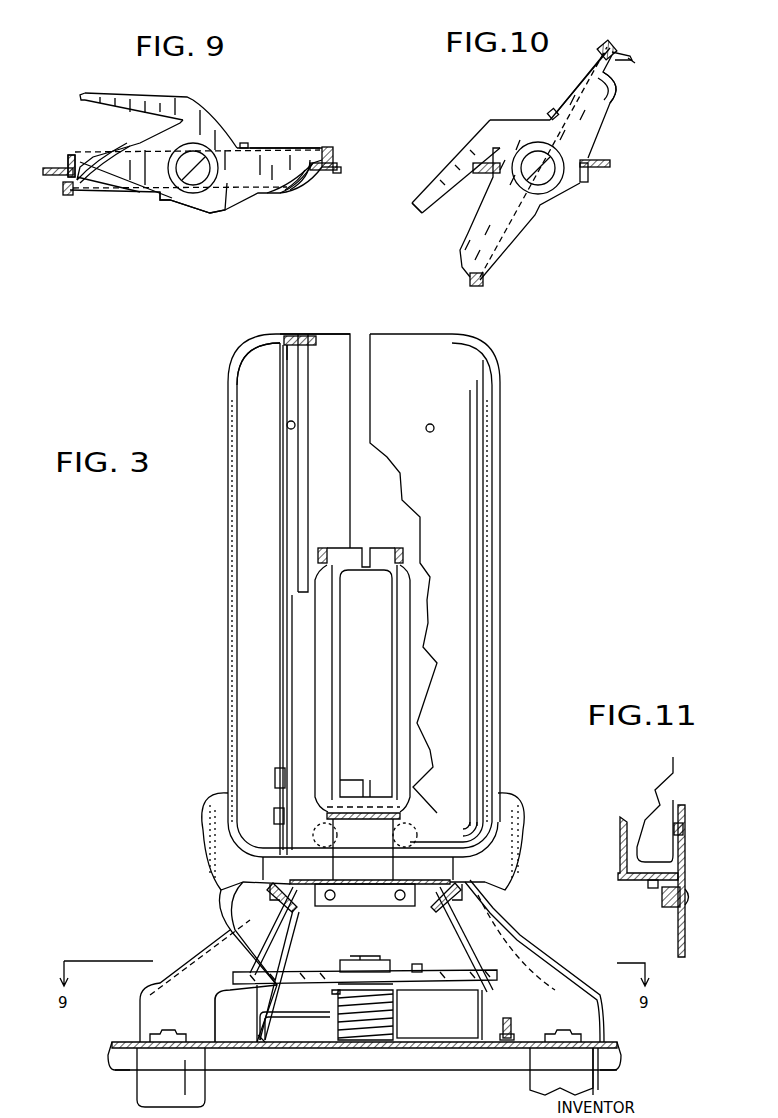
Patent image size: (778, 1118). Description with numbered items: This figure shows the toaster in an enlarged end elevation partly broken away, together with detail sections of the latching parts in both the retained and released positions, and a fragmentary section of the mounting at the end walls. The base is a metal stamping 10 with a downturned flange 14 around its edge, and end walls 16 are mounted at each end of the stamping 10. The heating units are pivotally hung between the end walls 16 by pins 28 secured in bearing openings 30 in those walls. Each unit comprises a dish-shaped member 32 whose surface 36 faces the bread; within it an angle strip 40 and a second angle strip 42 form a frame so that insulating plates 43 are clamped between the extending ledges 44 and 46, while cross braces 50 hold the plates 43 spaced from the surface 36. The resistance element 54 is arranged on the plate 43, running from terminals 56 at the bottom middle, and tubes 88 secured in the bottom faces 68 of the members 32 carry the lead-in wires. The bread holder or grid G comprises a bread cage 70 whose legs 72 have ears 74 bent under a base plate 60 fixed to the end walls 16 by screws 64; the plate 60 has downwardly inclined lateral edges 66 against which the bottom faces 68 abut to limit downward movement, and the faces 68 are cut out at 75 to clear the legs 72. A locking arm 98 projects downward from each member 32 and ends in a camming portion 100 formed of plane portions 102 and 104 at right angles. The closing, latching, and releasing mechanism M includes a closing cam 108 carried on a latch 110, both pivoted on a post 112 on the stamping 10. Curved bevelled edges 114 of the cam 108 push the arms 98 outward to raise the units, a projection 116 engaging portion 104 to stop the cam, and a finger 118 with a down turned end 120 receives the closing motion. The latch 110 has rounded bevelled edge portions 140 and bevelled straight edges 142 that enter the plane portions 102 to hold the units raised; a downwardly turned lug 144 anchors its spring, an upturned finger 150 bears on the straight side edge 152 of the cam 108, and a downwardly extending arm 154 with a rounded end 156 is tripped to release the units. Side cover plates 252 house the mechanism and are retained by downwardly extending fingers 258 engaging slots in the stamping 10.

In FIG. 3, the metal stamping 10 is at (300, 1050).
In FIG. 3, the downturned flange 14 is at (110, 1058).
In FIG. 11, the end walls 16 is at (686, 862).
In FIG. 11, the pins 28 is at (685, 832).
In FIG. 11, the bearing openings 30 is at (684, 818).
In FIG. 3, the dish-shaped member 32 is at (219, 511).
In FIG. 3, the surface 36 is at (228, 548).
In FIG. 3, the angle strip 40 is at (297, 334).
In FIG. 3, the second angle strip 42 is at (318, 334).
In FIG. 3, the insulating plates 43 is at (280, 405).
In FIG. 3, the extending ledge 44 is at (265, 346).
In FIG. 3, the extending ledge 46 is at (287, 348).
In FIG. 3, the cross braces 50 is at (308, 435).
In FIG. 3, the resistance element 54 is at (284, 490).
In FIG. 3, the terminals 56 is at (278, 770).
In FIG. 3, the base plate 60 is at (382, 886).
In FIG. 3, the screws 64 is at (331, 898).
In FIG. 11, the screws 64 is at (690, 897).
In FIG. 3, the downwardly inclined lateral edges 66 is at (455, 888).
In FIG. 3, the bottom faces 68 is at (435, 895).
In FIG. 3, the bread cage 70 is at (383, 560).
In FIG. 3, the legs 72 is at (430, 847).
In FIG. 11, the ears 74 is at (650, 890).
In FIG. 3, the cut out 75 is at (335, 870).
In FIG. 3, the tubes 88 is at (280, 872).
In FIG. 3, the locking arm 98 is at (222, 878).
In FIG. 9, the camming portion 100 is at (53, 158).
In FIG. 3, the camming portion 100 is at (268, 940).
In FIG. 9, the plane portion 102 is at (76, 155).
In FIG. 10, the plane portion 102 is at (590, 172).
In FIG. 3, the plane portion 102 is at (225, 950).
In FIG. 9, the plane portion 104 is at (60, 175).
In FIG. 10, the plane portion 104 is at (610, 162).
In FIG. 3, the plane portion 104 is at (278, 925).
In FIG. 9, the closing cam 108 is at (262, 175).
In FIG. 10, the closing cam 108 is at (514, 212).
In FIG. 3, the closing cam 108 is at (296, 970).
In FIG. 9, the latch 110 is at (300, 190).
In FIG. 10, the latch 110 is at (612, 103).
In FIG. 3, the latch 110 is at (462, 982).
In FIG. 9, the post 112 is at (200, 182).
In FIG. 10, the post 112 is at (550, 180).
In FIG. 3, the post 112 is at (372, 1048).
In FIG. 9, the curved bevelled edges 114 is at (118, 150).
In FIG. 9, the projection 116 is at (68, 196).
In FIG. 10, the projection 116 is at (604, 48).
In FIG. 9, the finger 118 is at (143, 82).
In FIG. 10, the finger 118 is at (440, 168).
In FIG. 3, the finger 118 is at (288, 1006).
In FIG. 9, the down turned end 120 is at (85, 82).
In FIG. 10, the down turned end 120 is at (416, 210).
In FIG. 3, the down turned end 120 is at (262, 1044).
In FIG. 9, the rounded bevelled edge portions 140 is at (138, 190).
In FIG. 10, the rounded bevelled edge portions 140 is at (618, 88).
In FIG. 9, the bevelled straight edges 142 is at (100, 193).
In FIG. 9, the downwardly turned lug 144 is at (168, 200).
In FIG. 3, the downwardly turned lug 144 is at (338, 1000).
In FIG. 9, the upturned finger 150 is at (244, 142).
In FIG. 10, the upturned finger 150 is at (550, 112).
In FIG. 3, the upturned finger 150 is at (420, 966).
In FIG. 9, the straight side edge 152 is at (272, 152).
In FIG. 10, the straight side edge 152 is at (575, 92).
In FIG. 9, the downwardly extending arm 154 is at (337, 160).
In FIG. 10, the downwardly extending arm 154 is at (622, 52).
In FIG. 3, the downwardly extending arm 154 is at (497, 1003).
In FIG. 9, the rounded end 156 is at (341, 170).
In FIG. 10, the rounded end 156 is at (630, 60).
In FIG. 3, the rounded end 156 is at (508, 1042).
In FIG. 3, the side cover plates 252 is at (566, 973).
In FIG. 3, the downwardly extending fingers 258 is at (612, 1062).
In FIG. 3, the bread holder or grid G is at (337, 532).
In FIG. 3, the closing, latching, and releasing mechanism M is at (421, 1045).